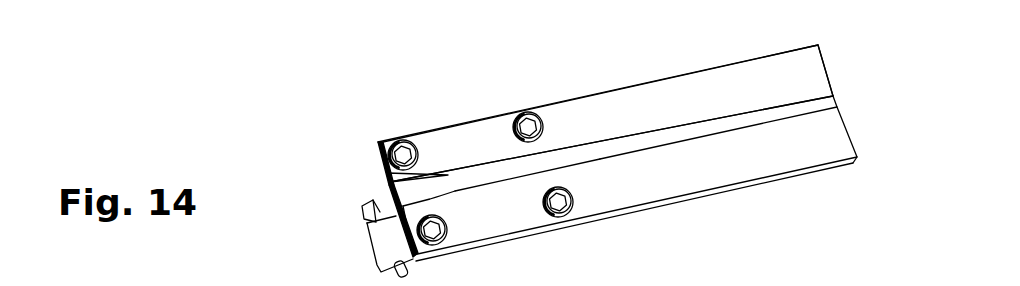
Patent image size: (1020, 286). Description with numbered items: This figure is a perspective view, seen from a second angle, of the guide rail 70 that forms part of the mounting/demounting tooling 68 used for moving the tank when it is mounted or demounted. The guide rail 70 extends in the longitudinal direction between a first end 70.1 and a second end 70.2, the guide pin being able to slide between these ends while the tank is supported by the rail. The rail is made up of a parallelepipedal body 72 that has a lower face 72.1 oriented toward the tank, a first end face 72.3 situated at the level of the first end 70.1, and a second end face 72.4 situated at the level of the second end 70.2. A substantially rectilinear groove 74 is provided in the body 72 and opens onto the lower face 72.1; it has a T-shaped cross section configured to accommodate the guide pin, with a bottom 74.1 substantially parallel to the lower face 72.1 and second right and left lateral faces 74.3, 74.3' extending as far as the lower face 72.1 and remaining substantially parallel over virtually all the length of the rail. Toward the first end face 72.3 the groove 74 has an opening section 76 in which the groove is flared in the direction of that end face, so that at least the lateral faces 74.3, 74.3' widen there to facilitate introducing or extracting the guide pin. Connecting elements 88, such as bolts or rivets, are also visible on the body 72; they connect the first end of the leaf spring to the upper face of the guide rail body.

The mounting/demounting tooling 68 is at (615, 138).
The guide rail 70 is at (830, 65).
The first end 70.1 is at (390, 142).
The second end 70.2 is at (820, 50).
The parallelepipedal body 72 is at (800, 164).
The lower face 72.1 is at (457, 142).
The first end face 72.3 is at (377, 148).
The second end face 72.4 is at (851, 135).
The groove 74 is at (843, 99).
The bottom 74.1 is at (612, 150).
The second right lateral face 74.3 is at (365, 179).
The second left lateral face 74.3' is at (328, 220).
The opening section 76 is at (388, 204).
The connecting element 88 is at (566, 188).